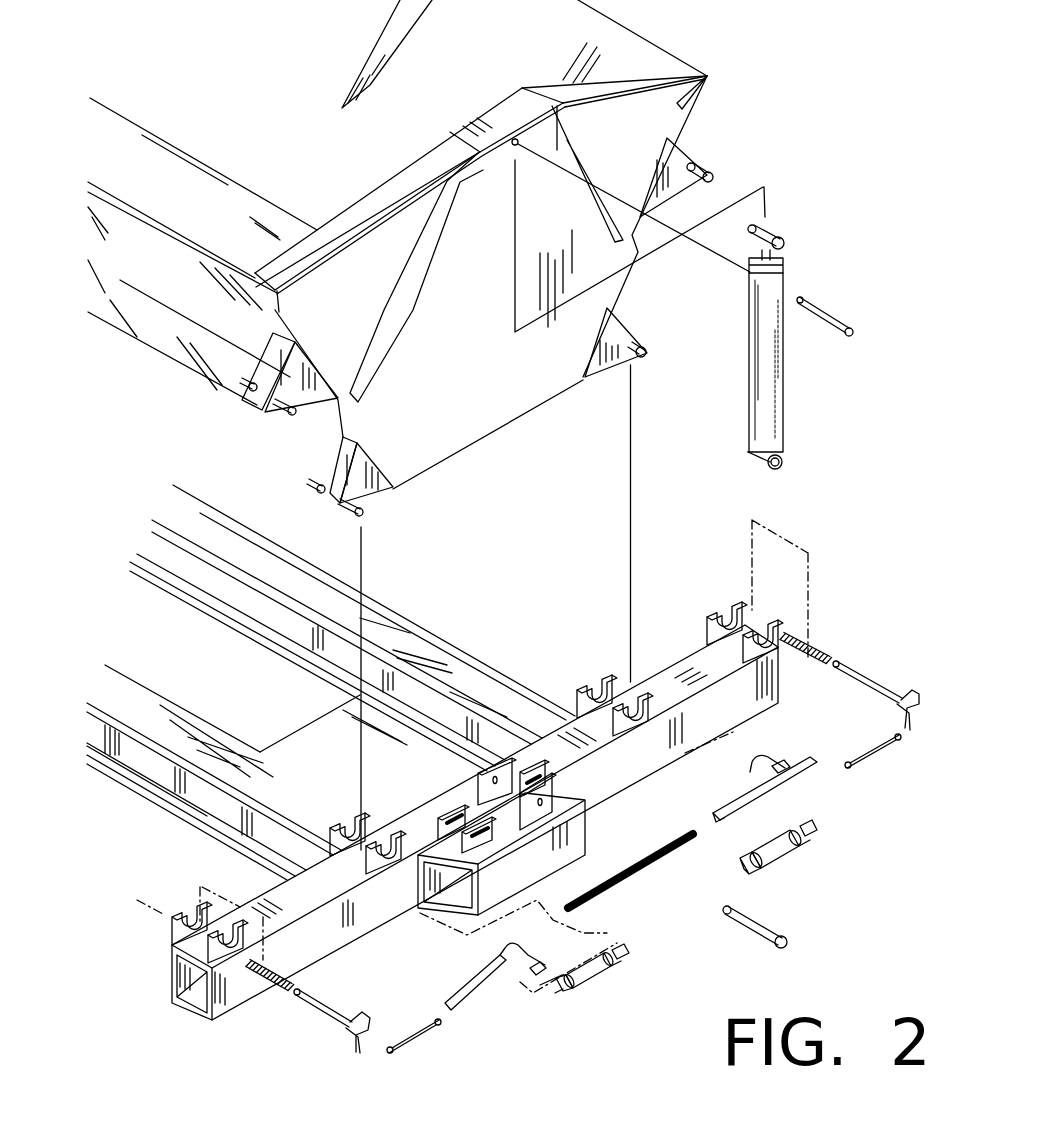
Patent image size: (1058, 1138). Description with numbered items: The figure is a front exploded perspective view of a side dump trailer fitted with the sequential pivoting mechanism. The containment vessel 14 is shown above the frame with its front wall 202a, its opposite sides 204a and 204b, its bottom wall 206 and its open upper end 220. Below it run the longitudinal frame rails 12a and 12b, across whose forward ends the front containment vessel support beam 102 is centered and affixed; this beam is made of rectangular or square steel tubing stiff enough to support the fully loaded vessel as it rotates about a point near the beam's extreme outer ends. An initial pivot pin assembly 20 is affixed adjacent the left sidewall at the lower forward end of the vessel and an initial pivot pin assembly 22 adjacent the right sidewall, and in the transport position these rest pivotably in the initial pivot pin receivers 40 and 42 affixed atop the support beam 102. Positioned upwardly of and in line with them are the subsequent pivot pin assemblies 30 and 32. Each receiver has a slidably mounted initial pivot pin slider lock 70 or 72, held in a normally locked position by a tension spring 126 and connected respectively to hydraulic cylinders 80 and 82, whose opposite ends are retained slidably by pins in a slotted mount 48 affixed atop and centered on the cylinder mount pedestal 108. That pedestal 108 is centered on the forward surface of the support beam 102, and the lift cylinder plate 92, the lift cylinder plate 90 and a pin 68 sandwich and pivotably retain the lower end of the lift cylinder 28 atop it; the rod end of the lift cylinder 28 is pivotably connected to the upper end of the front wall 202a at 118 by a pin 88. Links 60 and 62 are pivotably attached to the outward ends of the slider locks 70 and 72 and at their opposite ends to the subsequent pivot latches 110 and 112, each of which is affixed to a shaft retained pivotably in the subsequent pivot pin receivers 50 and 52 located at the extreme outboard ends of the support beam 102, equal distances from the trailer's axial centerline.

The containment vessel 14 is at (710, 76).
The open upper end 220 is at (387, 68).
The pivotal connection at upper end of front wall 118 is at (520, 141).
The subsequent pivot pin assembly 30 is at (704, 146).
The side 204b is at (345, 176).
The bottom wall 206 is at (204, 210).
The side 204a is at (170, 270).
The front wall 202a is at (468, 358).
The initial pivot pin assembly 20 is at (636, 318).
The lift cylinder 28 is at (748, 372).
The pin 88 is at (815, 308).
The subsequent pivot pin assembly 32 is at (262, 418).
The initial pivot pin assembly 22 is at (390, 507).
The longitudinal frame rail 12b is at (397, 612).
The subsequent pivot pin receiver 50 is at (790, 605).
The initial pivot pin receiver 40 is at (626, 655).
The subsequent pivot latch 110 is at (914, 685).
The longitudinal frame rail 12a is at (190, 712).
The link 60 is at (880, 752).
The initial pivot pin receiver 42 is at (345, 812).
The lift cylinder plate 92 is at (480, 767).
The slotted mount 48 is at (458, 806).
The initial pivot pin slider lock 70 is at (750, 783).
The lift cylinder plate 90 is at (578, 772).
The cylinder mount pedestal 108 is at (550, 876).
The hydraulic cylinder 80 is at (787, 858).
The tension spring 126 is at (595, 900).
The pin 68 is at (760, 924).
The subsequent pivot pin receiver 52 is at (174, 914).
The front containment vessel support beam 102 is at (326, 956).
The initial pivot pin slider lock 72 is at (478, 985).
The hydraulic cylinder 82 is at (598, 972).
The subsequent pivot latch 112 is at (345, 1045).
The link 62 is at (410, 1042).